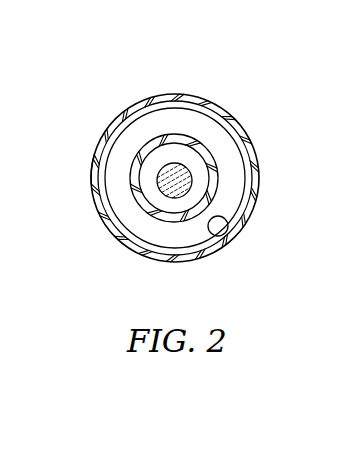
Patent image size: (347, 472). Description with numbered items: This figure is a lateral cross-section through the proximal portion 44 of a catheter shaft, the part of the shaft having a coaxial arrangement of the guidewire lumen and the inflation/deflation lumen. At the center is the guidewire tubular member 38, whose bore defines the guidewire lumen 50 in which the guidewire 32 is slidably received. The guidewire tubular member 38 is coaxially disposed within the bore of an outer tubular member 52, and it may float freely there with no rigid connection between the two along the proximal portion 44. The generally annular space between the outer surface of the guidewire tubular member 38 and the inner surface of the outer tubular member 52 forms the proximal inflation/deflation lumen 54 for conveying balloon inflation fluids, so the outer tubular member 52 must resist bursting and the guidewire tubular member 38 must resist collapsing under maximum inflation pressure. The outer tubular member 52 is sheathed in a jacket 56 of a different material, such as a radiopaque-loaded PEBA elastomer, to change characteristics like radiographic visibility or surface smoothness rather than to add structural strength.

The proximal portion 44 is at (153, 74).
The guidewire 32 is at (183, 162).
The guidewire tubular member 38 is at (135, 152).
The guidewire lumen 50 is at (180, 203).
The outer tubular member 52 is at (222, 248).
The proximal inflation/deflation lumen 54 is at (147, 228).
The jacket 56 is at (92, 200).